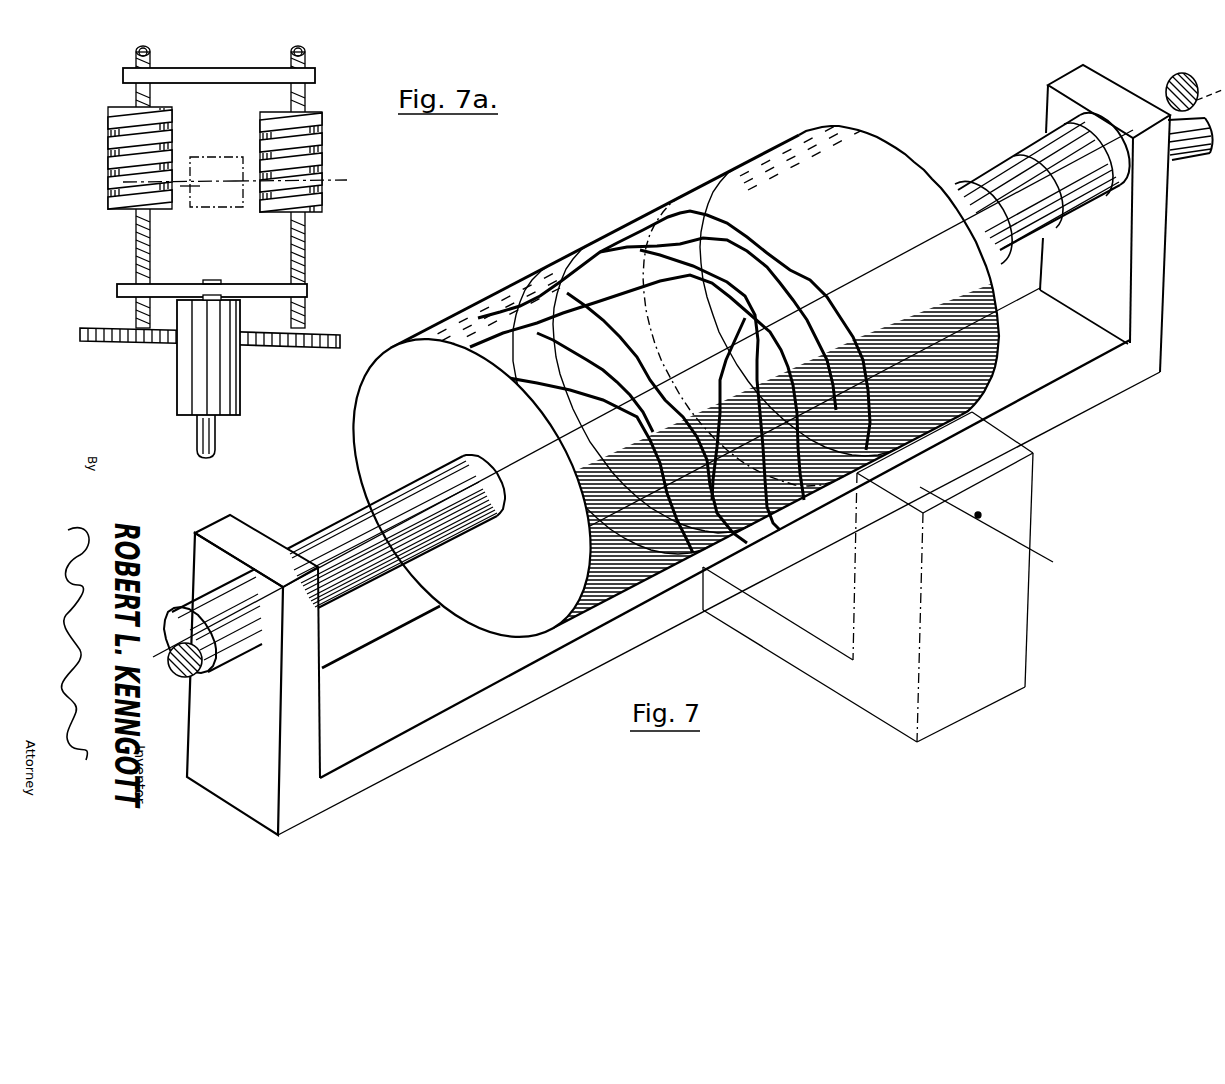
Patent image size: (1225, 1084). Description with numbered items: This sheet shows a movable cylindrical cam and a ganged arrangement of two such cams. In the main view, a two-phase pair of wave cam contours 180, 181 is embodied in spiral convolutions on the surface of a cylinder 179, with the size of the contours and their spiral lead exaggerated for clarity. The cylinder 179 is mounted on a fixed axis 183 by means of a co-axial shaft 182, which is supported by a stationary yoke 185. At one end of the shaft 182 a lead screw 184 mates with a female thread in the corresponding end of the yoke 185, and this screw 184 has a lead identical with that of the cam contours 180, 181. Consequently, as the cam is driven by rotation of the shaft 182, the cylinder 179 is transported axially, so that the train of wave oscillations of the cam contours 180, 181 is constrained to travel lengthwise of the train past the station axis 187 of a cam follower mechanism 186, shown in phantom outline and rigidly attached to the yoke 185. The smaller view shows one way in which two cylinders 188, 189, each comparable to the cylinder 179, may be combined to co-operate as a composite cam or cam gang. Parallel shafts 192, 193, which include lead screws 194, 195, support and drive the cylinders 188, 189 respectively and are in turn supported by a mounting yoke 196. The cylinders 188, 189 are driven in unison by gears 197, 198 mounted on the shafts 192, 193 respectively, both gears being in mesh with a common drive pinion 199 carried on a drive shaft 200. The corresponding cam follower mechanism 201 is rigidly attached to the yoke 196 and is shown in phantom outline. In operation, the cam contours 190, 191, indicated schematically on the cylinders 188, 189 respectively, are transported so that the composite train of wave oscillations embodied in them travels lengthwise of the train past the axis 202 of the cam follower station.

In FIG. 7, the cylinder 179 is at (880, 135).
In FIG. 7, the wave cam contour 180 is at (770, 317).
In FIG. 7, the wave cam contour 181 is at (805, 290).
In FIG. 7, the co-axial shaft 182 is at (343, 515).
In FIG. 7, the fixed axis 183 is at (1199, 98).
In FIG. 7, the lead screw 184 is at (1000, 163).
In FIG. 7, the stationary yoke 185 is at (483, 729).
In FIG. 7, the cam follower mechanism 186 is at (1035, 498).
In FIG. 7, the station axis 187 is at (1043, 556).
In FIG. 7A, the cylinder 188 is at (108, 140).
In FIG. 7A, the cylinder 189 is at (322, 133).
In FIG. 7A, the cam contour 190 is at (123, 182).
In FIG. 7A, the cam contour 191 is at (322, 179).
In FIG. 7A, the shaft 192 is at (130, 245).
In FIG. 7A, the shaft 193 is at (298, 250).
In FIG. 7A, the lead screw 194 is at (137, 56).
In FIG. 7A, the lead screw 195 is at (305, 58).
In FIG. 7A, the mounting yoke 196 is at (183, 66).
In FIG. 7A, the gear 197 is at (100, 345).
In FIG. 7A, the gear 198 is at (293, 347).
In FIG. 7A, the drive pinion 199 is at (240, 395).
In FIG. 7A, the drive shaft 200 is at (218, 440).
In FIG. 7A, the cam follower mechanism 201 is at (207, 157).
In FIG. 7A, the axis of cam follower station 202 is at (190, 183).